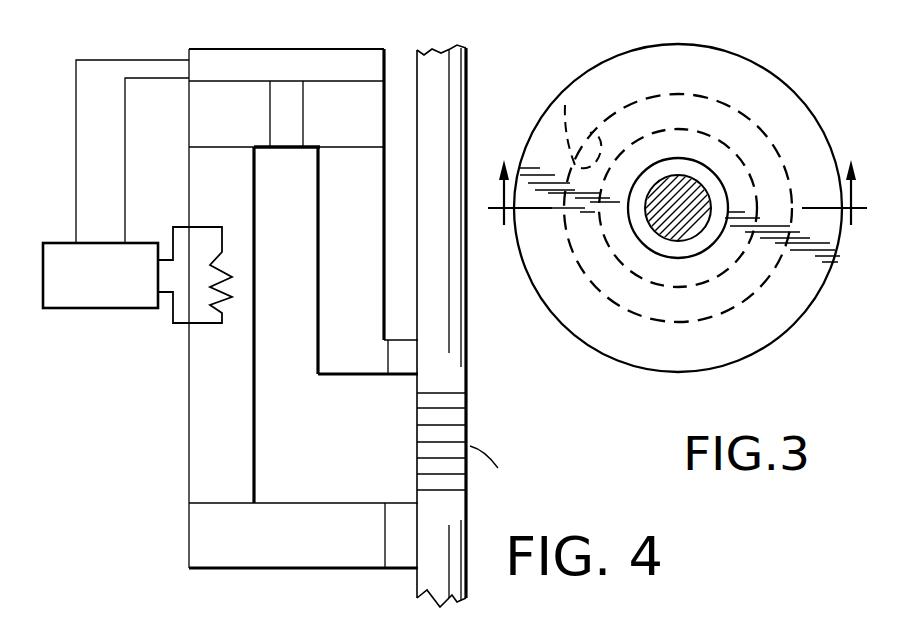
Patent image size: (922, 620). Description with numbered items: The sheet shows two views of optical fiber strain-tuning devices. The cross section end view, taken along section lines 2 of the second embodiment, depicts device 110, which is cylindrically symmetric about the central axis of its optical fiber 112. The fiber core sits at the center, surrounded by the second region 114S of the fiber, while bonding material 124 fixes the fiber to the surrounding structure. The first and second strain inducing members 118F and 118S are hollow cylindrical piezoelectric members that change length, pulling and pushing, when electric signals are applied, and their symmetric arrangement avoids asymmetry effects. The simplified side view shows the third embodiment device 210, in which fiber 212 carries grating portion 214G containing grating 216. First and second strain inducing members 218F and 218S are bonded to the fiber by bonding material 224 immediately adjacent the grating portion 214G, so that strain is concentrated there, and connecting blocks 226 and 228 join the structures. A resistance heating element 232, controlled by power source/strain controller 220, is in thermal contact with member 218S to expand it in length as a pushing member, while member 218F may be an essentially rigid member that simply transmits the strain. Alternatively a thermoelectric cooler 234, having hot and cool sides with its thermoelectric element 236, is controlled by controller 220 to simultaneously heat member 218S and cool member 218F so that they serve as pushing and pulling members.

In FIG. 3, the second embodiment device 110 is at (757, 425).
In FIG. 3, the optical fiber 112 is at (697, 188).
In FIG. 3, the second region 114S is at (678, 191).
In FIG. 3, the second strain inducing member 118S is at (562, 98).
In FIG. 3, the first strain inducing member 118F is at (733, 265).
In FIG. 3, the bonding material 124 is at (645, 0).
In FIG. 3, the section line 2- 2 is at (677, 179).
In FIG. 4, the temperature control assembly 210 is at (178, 125).
In FIG. 4, the fiber 212 is at (452, 289).
In FIG. 4, the grating portion 214G is at (467, 392).
In FIG. 4, the grating 216 is at (470, 420).
In FIG. 4, the first strain inducing member 218F is at (318, 358).
In FIG. 4, the second strain inducing member 218S is at (210, 435).
In FIG. 4, the power source/strain controller 220 is at (99, 310).
In FIG. 4, the bonding material 224 is at (398, 358).
In FIG. 4, the connecting block 226 is at (353, 105).
In FIG. 4, the connecting block 228 is at (205, 538).
In FIG. 4, the resistance heating element 232 is at (228, 278).
In FIG. 4, the thermoelectric cooler 234 is at (203, 48).
In FIG. 4, the thermoelectric element 236 is at (290, 135).